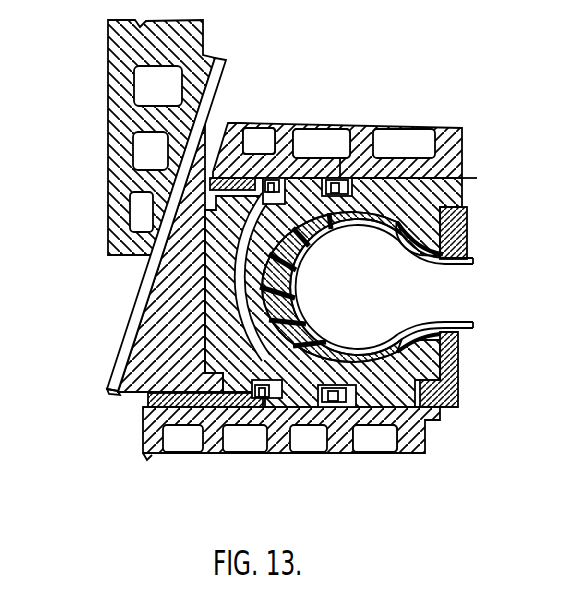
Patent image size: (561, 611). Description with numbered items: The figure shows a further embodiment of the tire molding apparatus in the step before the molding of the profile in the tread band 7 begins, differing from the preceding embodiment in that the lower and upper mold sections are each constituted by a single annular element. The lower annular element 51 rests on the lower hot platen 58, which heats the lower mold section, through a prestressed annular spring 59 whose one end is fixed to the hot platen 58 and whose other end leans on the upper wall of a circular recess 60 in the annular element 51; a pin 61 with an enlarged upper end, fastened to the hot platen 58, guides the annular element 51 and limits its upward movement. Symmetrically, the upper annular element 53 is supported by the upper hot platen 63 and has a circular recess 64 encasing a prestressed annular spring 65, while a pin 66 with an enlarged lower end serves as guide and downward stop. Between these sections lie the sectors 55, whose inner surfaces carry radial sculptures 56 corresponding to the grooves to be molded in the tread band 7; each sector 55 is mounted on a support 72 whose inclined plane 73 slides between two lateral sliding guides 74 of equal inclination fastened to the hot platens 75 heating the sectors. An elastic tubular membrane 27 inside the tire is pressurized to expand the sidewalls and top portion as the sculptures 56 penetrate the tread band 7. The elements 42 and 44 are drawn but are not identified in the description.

The tread band 7 is at (268, 303).
The elastic tubular membrane 27 is at (292, 258).
The lower flange 42 is at (457, 347).
The upper flange 44 is at (473, 261).
The annular element 51 is at (303, 390).
The annular element 53 is at (313, 160).
The sectors 55 is at (148, 399).
The radial sculptures 56 is at (243, 323).
The hot platen 58 is at (148, 438).
The prestressed annular spring 59 is at (320, 392).
The circular recess 60 is at (363, 443).
The pin 61 is at (262, 408).
The hot platen 63 is at (237, 132).
The circular recess 64 is at (370, 130).
The prestressed annular spring 65 is at (346, 165).
The pin 66 is at (288, 128).
The support 72 is at (133, 363).
The inclined plane 73 is at (110, 388).
The lateral sliding guides 74 is at (220, 58).
The hot platens 75 is at (122, 117).